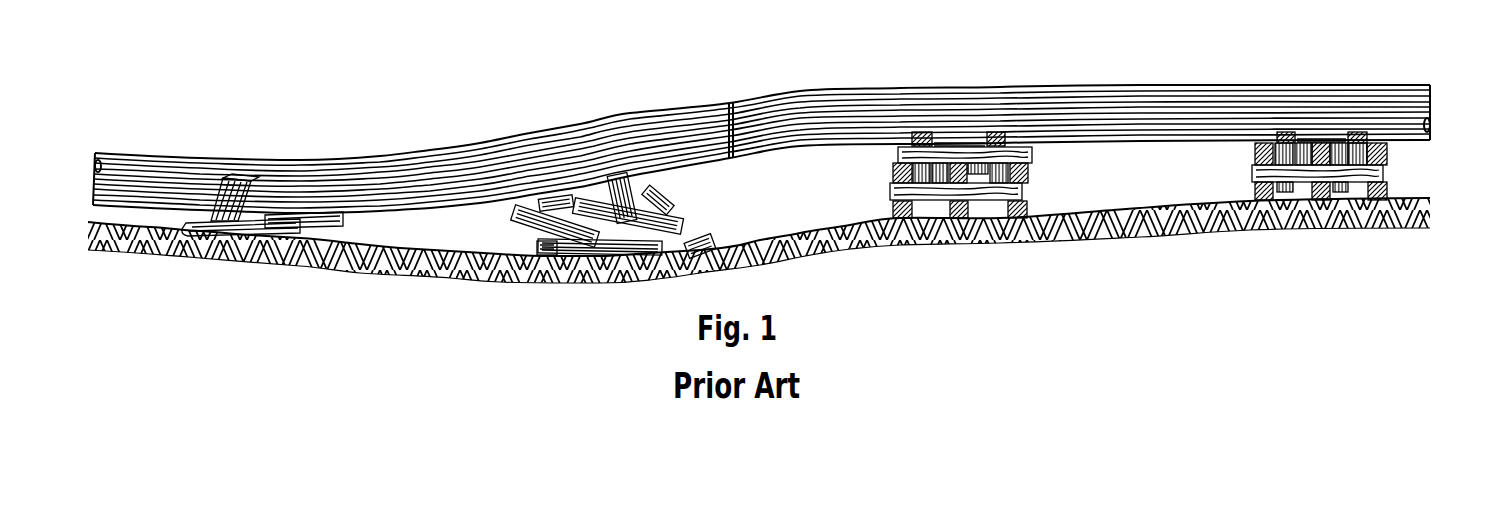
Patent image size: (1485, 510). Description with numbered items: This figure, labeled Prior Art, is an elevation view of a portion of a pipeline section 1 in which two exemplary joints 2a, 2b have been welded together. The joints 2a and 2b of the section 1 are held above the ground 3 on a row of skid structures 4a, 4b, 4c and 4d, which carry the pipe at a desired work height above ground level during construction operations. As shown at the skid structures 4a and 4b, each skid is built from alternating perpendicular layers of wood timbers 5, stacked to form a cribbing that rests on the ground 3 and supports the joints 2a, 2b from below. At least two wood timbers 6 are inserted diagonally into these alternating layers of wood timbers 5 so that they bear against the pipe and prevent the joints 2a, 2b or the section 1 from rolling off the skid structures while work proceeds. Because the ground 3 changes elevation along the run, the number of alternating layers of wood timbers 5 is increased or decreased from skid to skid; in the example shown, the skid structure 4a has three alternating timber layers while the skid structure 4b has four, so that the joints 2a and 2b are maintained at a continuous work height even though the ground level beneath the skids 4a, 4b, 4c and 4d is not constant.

The section 1 is at (1309, 44).
The joint 2a is at (1105, 88).
The joint 2b is at (549, 133).
The ground 3 is at (765, 238).
The skid structure 4a is at (1287, 202).
The skid structure 4b is at (935, 212).
The skid structure 4c is at (614, 252).
The skid structure 4d is at (238, 232).
The wood timbers 5 is at (890, 184).
The wood timbers 6 is at (927, 140).